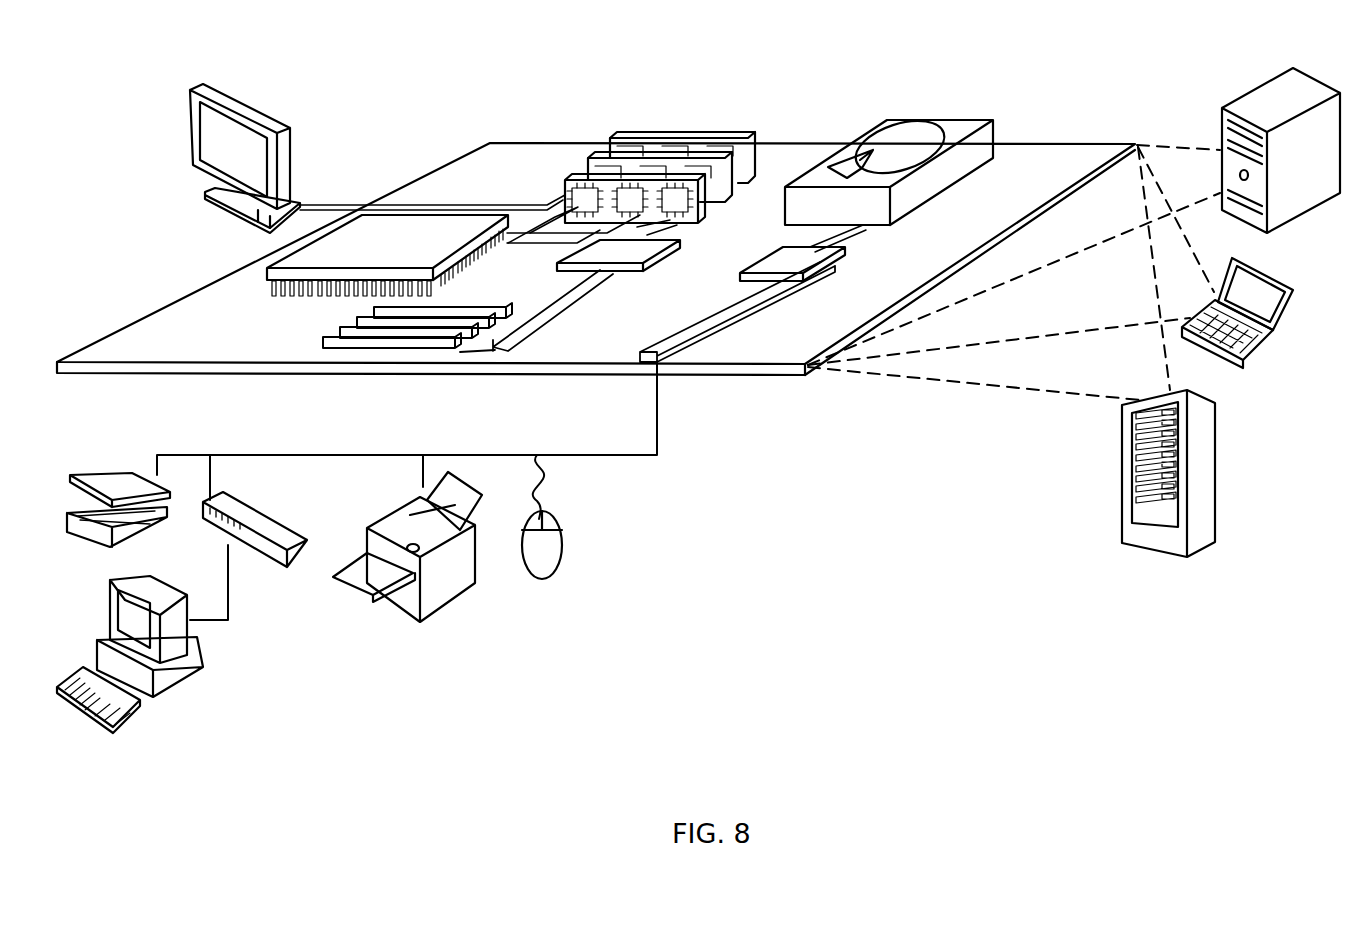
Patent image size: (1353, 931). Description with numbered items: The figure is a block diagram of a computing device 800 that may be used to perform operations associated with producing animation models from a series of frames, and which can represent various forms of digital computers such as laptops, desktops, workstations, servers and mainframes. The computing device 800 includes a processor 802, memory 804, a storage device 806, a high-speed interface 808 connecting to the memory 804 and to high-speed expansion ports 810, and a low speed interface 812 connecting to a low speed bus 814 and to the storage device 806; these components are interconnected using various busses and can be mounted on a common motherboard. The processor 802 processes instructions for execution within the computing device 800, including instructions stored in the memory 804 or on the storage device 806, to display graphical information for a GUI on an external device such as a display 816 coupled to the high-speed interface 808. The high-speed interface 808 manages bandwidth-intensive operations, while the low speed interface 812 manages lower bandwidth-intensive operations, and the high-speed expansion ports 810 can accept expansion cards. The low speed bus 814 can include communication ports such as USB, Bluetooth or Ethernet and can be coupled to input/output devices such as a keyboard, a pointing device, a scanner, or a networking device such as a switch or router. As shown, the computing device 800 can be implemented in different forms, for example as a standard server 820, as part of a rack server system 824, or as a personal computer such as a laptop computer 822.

The computing device 800 is at (638, 438).
The processor 802 is at (275, 270).
The memory 804 is at (624, 160).
The storage device 806 is at (880, 121).
The high-speed interface 808 is at (597, 253).
The high-speed expansion ports 810 is at (340, 333).
The low speed interface 812 is at (780, 255).
The low speed bus 814 is at (668, 362).
The display 816 is at (200, 87).
The standard server 820 is at (1222, 124).
The laptop computer 822 is at (1292, 288).
The rack server system 824 is at (1122, 500).